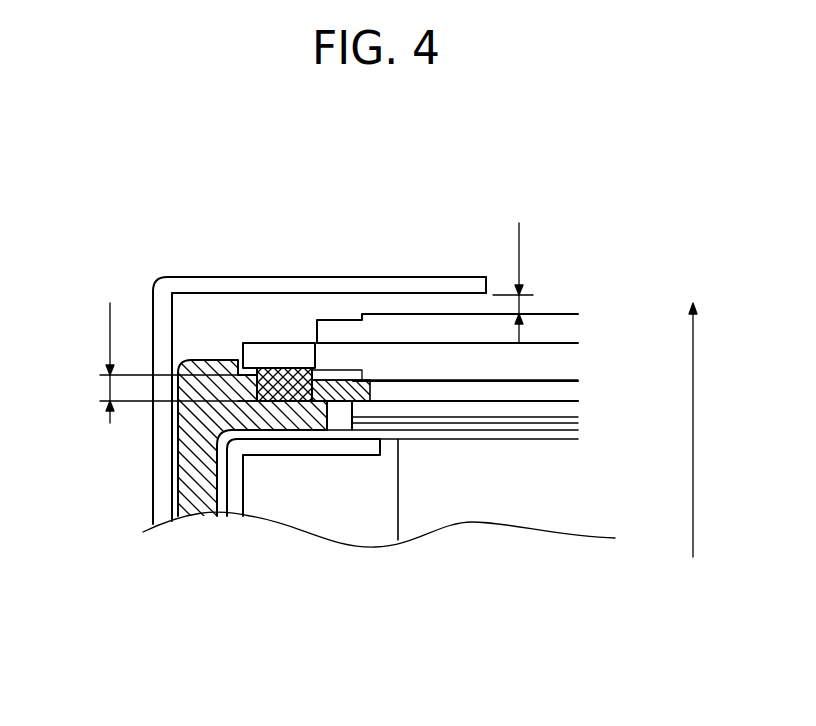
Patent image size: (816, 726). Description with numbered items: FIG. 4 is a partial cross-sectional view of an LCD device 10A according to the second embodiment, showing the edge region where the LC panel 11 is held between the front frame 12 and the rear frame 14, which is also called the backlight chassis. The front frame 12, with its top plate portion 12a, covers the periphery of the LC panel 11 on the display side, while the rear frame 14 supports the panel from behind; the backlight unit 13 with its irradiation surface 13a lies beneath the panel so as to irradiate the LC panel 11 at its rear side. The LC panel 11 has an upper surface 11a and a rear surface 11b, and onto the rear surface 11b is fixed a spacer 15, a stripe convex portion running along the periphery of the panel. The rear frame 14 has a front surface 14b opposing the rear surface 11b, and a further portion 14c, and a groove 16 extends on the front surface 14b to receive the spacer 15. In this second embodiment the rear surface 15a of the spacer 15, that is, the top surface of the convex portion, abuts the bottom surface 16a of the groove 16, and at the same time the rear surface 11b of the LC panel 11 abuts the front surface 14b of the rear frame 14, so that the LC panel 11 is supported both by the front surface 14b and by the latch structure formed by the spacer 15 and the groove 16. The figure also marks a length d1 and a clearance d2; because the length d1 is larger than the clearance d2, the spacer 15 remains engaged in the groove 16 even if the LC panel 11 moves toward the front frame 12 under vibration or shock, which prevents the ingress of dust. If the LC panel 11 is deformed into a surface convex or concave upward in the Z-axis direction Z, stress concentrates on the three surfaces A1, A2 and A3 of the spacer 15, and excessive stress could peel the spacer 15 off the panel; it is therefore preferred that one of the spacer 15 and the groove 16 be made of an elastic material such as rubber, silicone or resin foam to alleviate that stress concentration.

The LCD device 10A is at (397, 186).
The LC panel 11 is at (487, 327).
The upper surface portion of cover panel 11a is at (552, 314).
The rear surface of the LC panel 11b is at (552, 382).
The front frame 12 is at (299, 367).
The top wall of frame 12a is at (407, 290).
The backlight unit 13 is at (434, 502).
The irradiation surface 13a is at (513, 403).
The rear frame 14 is at (197, 487).
The front surface of the rear frame 14b is at (413, 380).
The housing support portion 14c is at (413, 381).
The spacer 15 is at (265, 342).
The rear surface of the spacer 15a is at (302, 369).
The groove 16 is at (250, 383).
The bottom surface of the groove 16a is at (280, 410).
The surface of the spacer A1 is at (281, 390).
The surface of the spacer A2 is at (265, 398).
The surface of the spacer A3 is at (318, 400).
The length d1 is at (205, 363).
The clearance d2 is at (513, 283).
The Z-axis direction Z is at (692, 418).